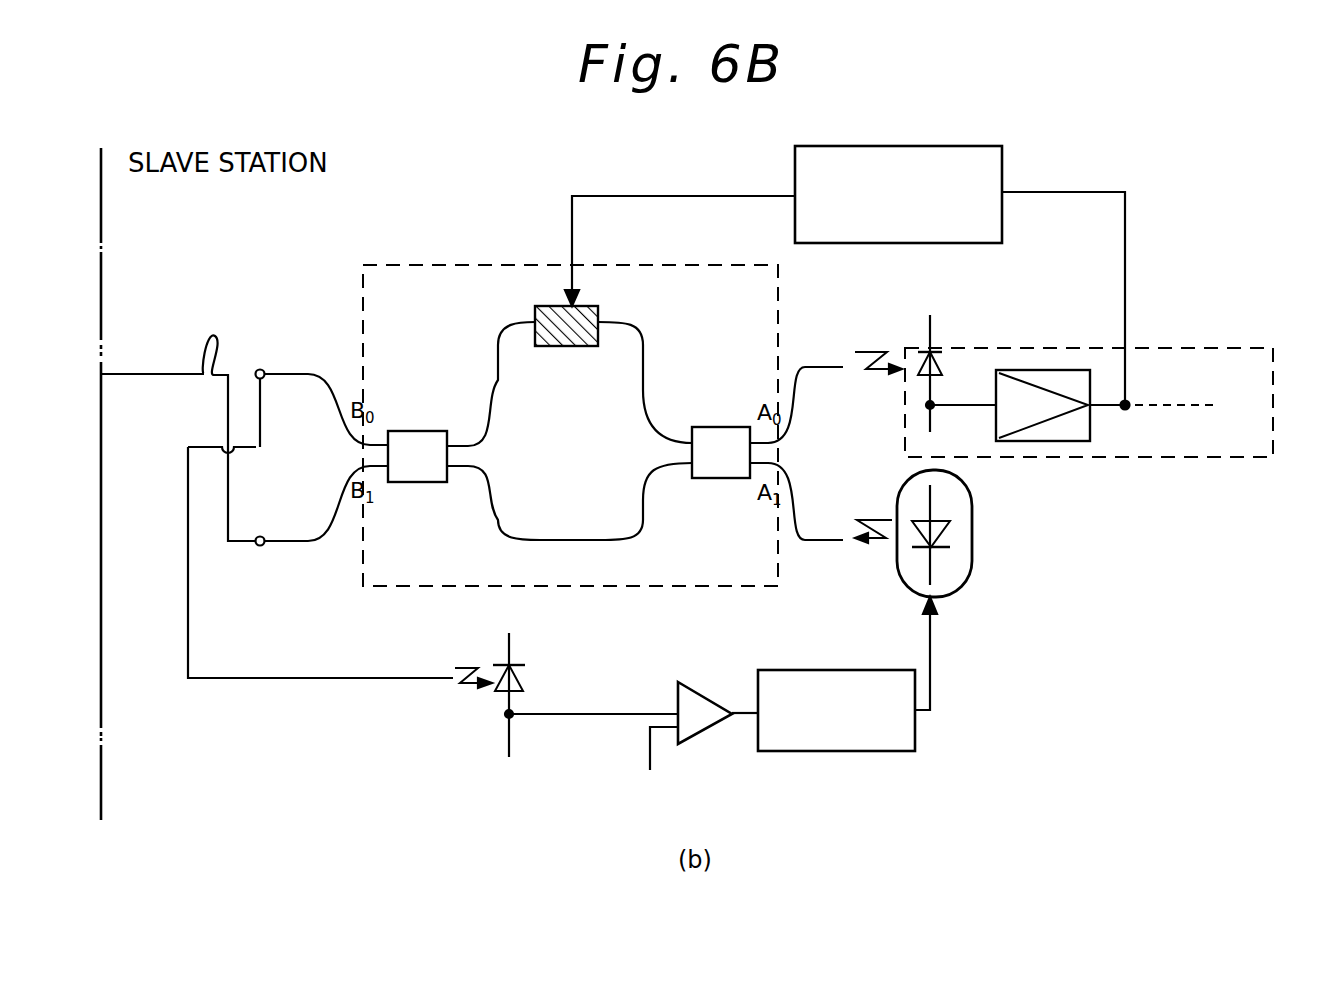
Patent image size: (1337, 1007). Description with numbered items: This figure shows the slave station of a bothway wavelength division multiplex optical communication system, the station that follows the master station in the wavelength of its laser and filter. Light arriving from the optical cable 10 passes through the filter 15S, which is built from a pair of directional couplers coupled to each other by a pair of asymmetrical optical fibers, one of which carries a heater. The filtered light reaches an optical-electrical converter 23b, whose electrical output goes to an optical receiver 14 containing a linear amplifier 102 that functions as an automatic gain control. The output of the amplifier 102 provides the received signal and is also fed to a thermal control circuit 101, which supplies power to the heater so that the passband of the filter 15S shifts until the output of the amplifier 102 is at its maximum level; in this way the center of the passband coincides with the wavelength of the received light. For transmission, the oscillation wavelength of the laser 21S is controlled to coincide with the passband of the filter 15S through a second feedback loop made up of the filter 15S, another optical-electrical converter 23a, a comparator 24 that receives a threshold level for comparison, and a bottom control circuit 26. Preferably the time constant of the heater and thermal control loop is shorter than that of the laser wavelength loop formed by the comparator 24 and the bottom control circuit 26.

The optical cable 10 is at (219, 334).
The filter 15S is at (430, 265).
The thermal control circuit 101 is at (898, 146).
The optical receiver 14 is at (1203, 348).
The optical-electrical converter 23b is at (936, 364).
The linear amplifier 102 is at (1090, 433).
The laser 21S is at (972, 547).
The optical-electrical converter 23a is at (518, 682).
The comparator 24 is at (701, 690).
The bottom control circuit 26 is at (838, 752).